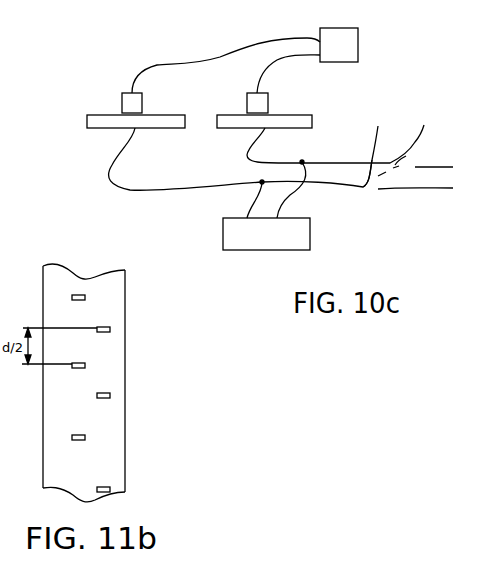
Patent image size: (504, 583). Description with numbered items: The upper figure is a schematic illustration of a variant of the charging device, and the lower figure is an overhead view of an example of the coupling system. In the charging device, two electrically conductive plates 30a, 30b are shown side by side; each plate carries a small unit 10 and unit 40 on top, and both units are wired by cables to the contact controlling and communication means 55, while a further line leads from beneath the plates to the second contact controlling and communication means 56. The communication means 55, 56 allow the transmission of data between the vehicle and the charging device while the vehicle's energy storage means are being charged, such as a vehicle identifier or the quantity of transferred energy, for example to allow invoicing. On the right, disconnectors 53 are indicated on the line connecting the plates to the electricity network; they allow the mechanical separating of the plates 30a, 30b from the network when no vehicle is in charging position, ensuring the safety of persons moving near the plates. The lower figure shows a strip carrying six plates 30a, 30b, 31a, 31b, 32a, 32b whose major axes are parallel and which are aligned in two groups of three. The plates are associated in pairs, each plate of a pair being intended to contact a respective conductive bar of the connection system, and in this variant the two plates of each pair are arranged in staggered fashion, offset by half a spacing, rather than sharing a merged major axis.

In FIG. 10c, the first sensor 10 is at (142, 107).
In FIG. 10c, the second sensor 40 is at (268, 107).
In FIG. 10c, the communication means 55 is at (357, 45).
In FIG. 10c, the communication means 56 is at (311, 237).
In FIG. 10c, the disconnectors 53 is at (402, 148).
In FIG. 10c, the plate 30a is at (162, 128).
In FIG. 11b, the plate 30a is at (78, 294).
In FIG. 10c, the plate 30b is at (300, 128).
In FIG. 11b, the plate 30b is at (110, 328).
In FIG. 11b, the plate 31a is at (80, 368).
In FIG. 11b, the plate 31b is at (110, 393).
In FIG. 11b, the plate 32a is at (78, 440).
In FIG. 11b, the plate 32b is at (110, 487).